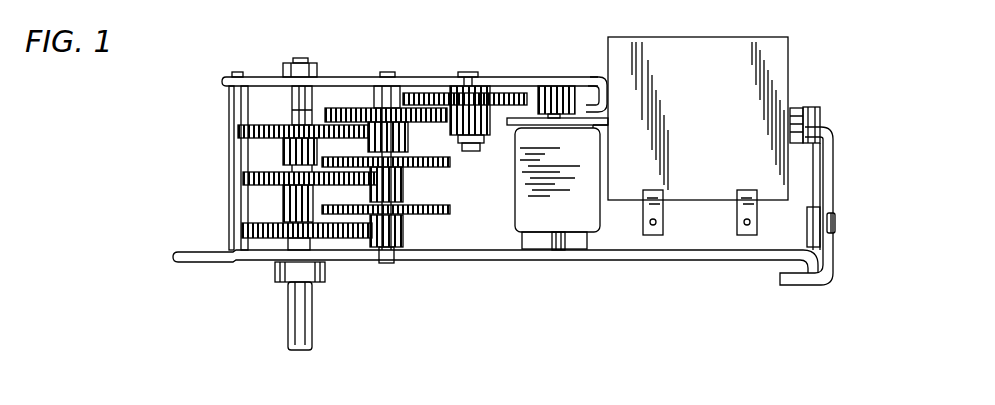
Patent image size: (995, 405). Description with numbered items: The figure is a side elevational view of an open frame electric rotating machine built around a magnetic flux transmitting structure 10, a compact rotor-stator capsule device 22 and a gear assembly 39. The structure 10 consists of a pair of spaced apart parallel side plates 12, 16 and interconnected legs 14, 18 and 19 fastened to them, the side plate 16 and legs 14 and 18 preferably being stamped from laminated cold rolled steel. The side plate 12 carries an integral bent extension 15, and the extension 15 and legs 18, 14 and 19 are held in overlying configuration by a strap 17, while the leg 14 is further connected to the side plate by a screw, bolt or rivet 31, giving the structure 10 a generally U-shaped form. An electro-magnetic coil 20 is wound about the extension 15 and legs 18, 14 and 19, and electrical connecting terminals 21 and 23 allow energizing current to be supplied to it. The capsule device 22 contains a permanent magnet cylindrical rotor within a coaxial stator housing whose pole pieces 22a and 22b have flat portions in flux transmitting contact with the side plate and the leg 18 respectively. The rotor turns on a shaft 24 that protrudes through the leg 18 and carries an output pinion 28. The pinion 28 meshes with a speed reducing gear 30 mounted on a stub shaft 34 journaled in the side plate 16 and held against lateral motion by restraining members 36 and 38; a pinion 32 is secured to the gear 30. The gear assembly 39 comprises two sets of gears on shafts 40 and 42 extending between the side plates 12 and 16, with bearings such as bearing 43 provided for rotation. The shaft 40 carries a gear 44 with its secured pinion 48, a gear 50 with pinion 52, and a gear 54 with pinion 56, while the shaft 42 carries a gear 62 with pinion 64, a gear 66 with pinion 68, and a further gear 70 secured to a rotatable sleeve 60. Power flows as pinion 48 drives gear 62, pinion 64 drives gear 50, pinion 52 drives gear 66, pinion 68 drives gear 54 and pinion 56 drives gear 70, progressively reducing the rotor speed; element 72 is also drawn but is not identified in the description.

The magnetic flux transmitting structure 10 is at (401, 55).
The side plate 12 is at (413, 78).
The leg 14 is at (834, 133).
The extension 15 is at (820, 110).
The side plate 16 is at (510, 262).
The strap 17 is at (800, 106).
The leg 18 is at (596, 110).
The leg 19 is at (813, 165).
The electro-magnetic coil 20 is at (672, 46).
The electrical connecting terminal 21 is at (657, 210).
The rotor-stator capsule device 22 is at (543, 170).
The pole piece 22a is at (587, 246).
The pole piece 22b is at (600, 122).
The electrical connecting terminal 23 is at (745, 232).
The rotor shaft 24 is at (562, 86).
The output pinion 28 is at (593, 76).
The gear 30 is at (545, 92).
The fastener 31 is at (838, 223).
The pinion 32 is at (486, 133).
The stub shaft 34 is at (479, 150).
The restraining member 36 is at (480, 75).
The restraining member 38 is at (453, 88).
The gear assembly 39 is at (403, 268).
The shaft 40 is at (372, 98).
The shaft 42 is at (312, 333).
The bearing 43 is at (312, 68).
The gear 44 is at (430, 124).
The pinion 48 is at (406, 136).
The gear 50 is at (446, 165).
The pinion 52 is at (405, 183).
The gear 54 is at (452, 210).
The pinion 56 is at (405, 229).
The rotatable sleeve 60 is at (322, 281).
The gear 62 is at (272, 128).
The pinion 64 is at (287, 160).
The gear 66 is at (250, 172).
The pinion 68 is at (287, 208).
The gear 70 is at (250, 232).
The support post 72 is at (232, 207).